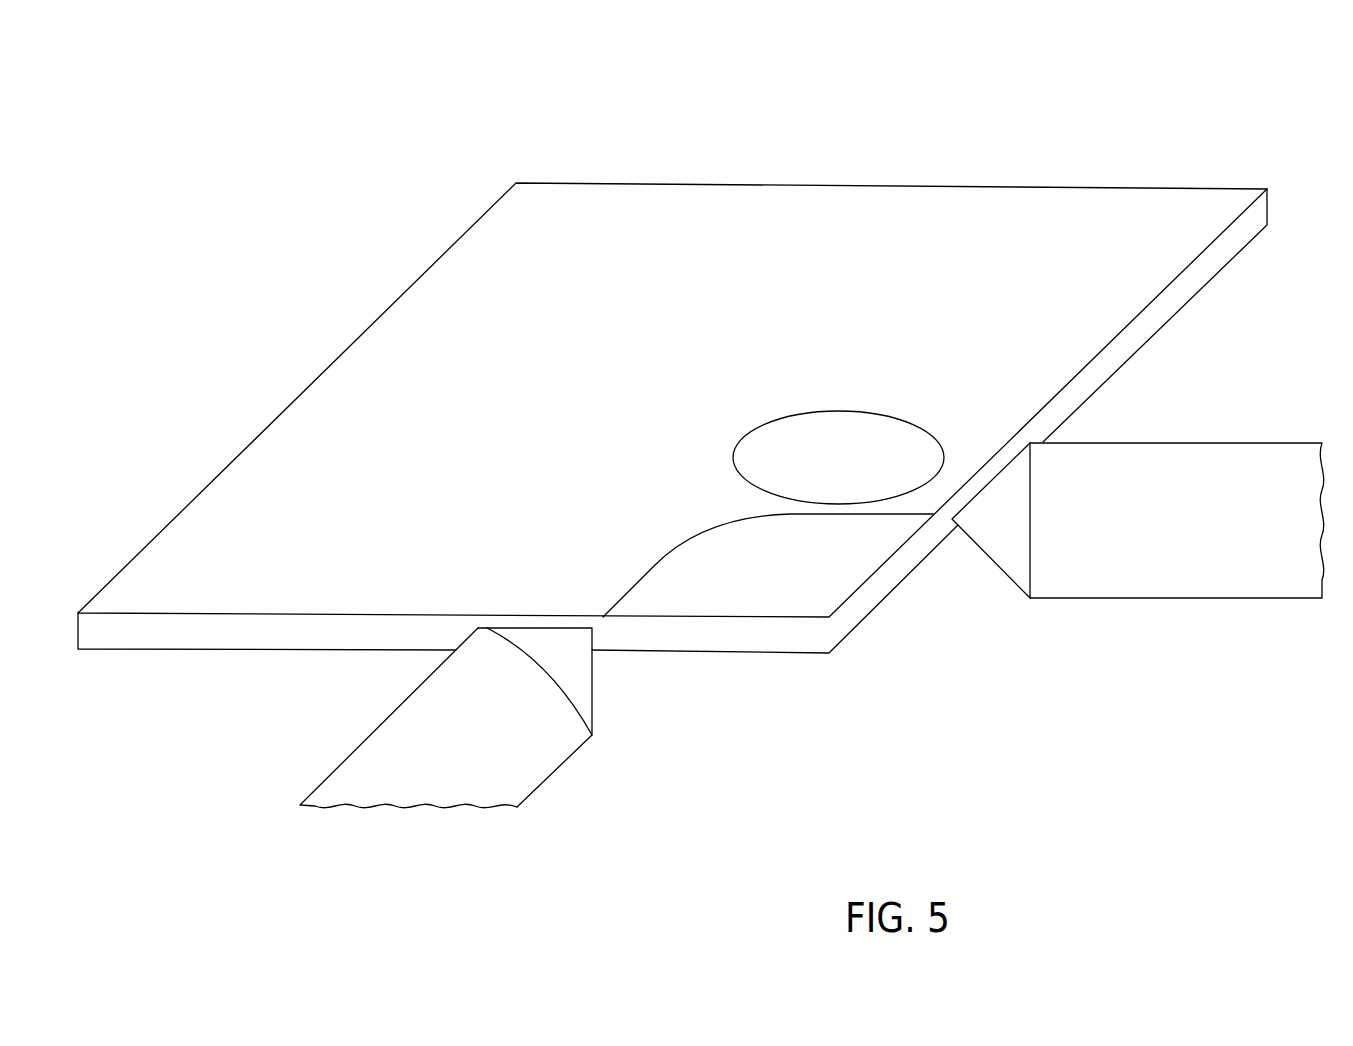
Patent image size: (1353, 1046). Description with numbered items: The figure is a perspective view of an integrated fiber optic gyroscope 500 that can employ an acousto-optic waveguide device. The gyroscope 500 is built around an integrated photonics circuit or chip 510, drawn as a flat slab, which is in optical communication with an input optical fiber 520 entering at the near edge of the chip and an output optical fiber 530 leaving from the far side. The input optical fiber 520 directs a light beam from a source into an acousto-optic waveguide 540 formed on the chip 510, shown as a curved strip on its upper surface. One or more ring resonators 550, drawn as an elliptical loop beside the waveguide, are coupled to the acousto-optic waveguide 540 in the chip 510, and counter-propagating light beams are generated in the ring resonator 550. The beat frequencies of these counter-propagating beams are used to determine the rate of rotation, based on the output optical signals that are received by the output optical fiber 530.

The integrated fiber optic gyroscope 500 is at (446, 150).
The integrated photonics circuit or chip 510 is at (1128, 215).
The input optical fiber 520 is at (550, 777).
The output optical fiber 530 is at (1234, 443).
The acousto-optic waveguide 540 is at (688, 537).
The ring resonator 550 is at (828, 411).